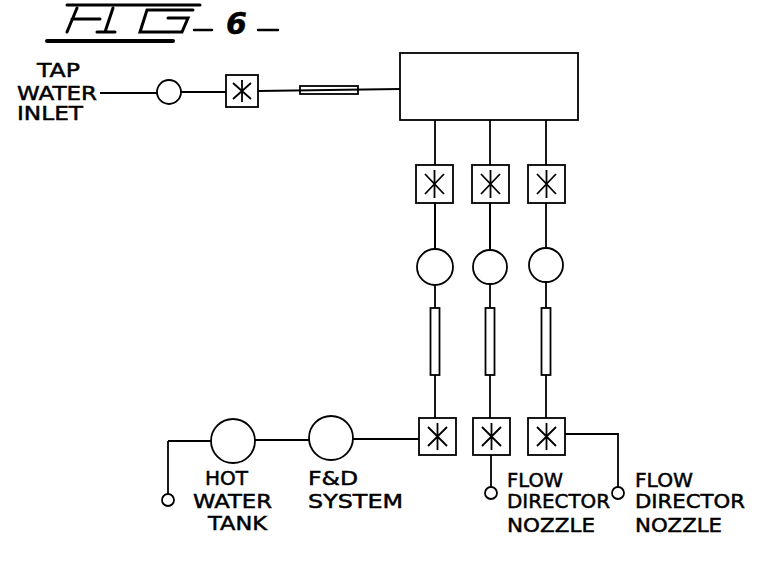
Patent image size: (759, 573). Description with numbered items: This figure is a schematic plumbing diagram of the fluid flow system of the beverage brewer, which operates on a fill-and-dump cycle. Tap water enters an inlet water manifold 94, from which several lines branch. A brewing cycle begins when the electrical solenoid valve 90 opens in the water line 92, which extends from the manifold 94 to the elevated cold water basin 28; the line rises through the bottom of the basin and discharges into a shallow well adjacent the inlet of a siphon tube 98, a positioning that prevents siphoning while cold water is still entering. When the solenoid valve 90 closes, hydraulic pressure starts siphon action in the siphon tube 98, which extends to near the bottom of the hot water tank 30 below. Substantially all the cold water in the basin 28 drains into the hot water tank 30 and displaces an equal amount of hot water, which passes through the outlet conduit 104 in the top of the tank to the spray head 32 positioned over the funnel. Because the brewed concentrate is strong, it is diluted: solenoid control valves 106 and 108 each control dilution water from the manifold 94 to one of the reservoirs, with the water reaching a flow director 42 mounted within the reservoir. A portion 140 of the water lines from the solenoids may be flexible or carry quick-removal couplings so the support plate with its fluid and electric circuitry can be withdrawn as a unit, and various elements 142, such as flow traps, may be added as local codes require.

The inlet water manifold 94 is at (567, 53).
The portion of the water lines 140 is at (362, 70).
The various elements 142 is at (242, 107).
The water line 92 is at (433, 225).
The electrical solenoid valve 90 is at (430, 267).
The solenoid control valve 108 is at (493, 250).
The solenoid control valve 106 is at (557, 263).
The outlet conduit 104 is at (168, 440).
The hot water tank 30 is at (232, 427).
The siphon tube 98 is at (276, 438).
The cold water basin 28 is at (328, 422).
The spray head 32 is at (168, 507).
The flow director 42 is at (488, 500).